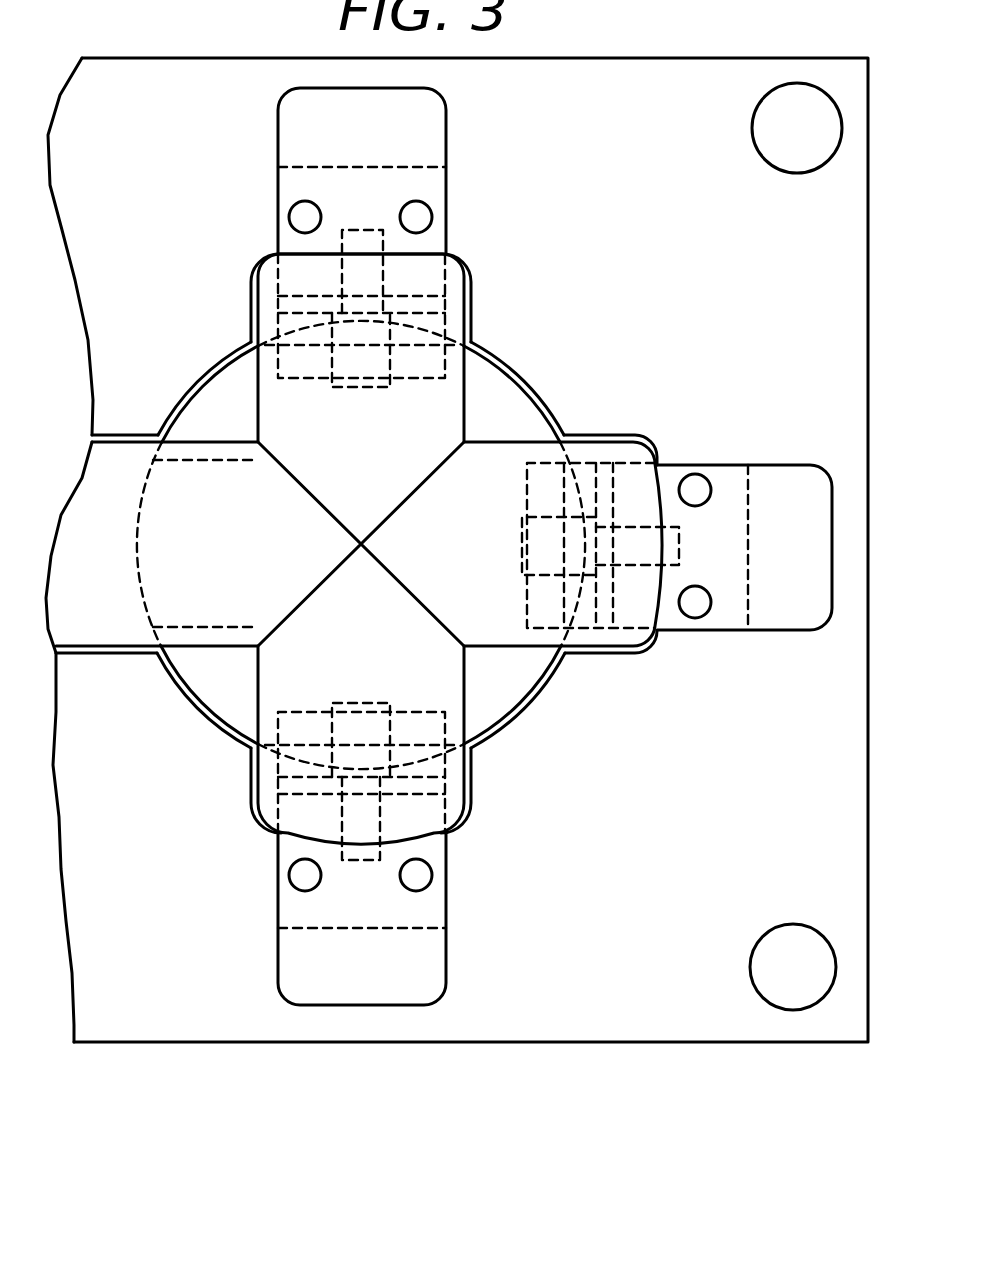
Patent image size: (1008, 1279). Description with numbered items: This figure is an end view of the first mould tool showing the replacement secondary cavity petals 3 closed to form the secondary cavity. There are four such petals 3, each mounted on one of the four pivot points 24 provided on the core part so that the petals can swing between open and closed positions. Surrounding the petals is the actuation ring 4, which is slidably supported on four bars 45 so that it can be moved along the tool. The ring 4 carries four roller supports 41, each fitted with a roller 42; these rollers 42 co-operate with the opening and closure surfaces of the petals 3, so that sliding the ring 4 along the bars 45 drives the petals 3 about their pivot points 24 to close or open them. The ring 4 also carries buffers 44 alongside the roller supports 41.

The secondary cavity petals 3 is at (385, 463).
The actuation ring 4 is at (768, 371).
The pivot points 24 is at (320, 378).
The roller supports 41 is at (727, 605).
The rollers 42 is at (360, 228).
The buffers 44 is at (697, 490).
The bars 45 is at (778, 125).